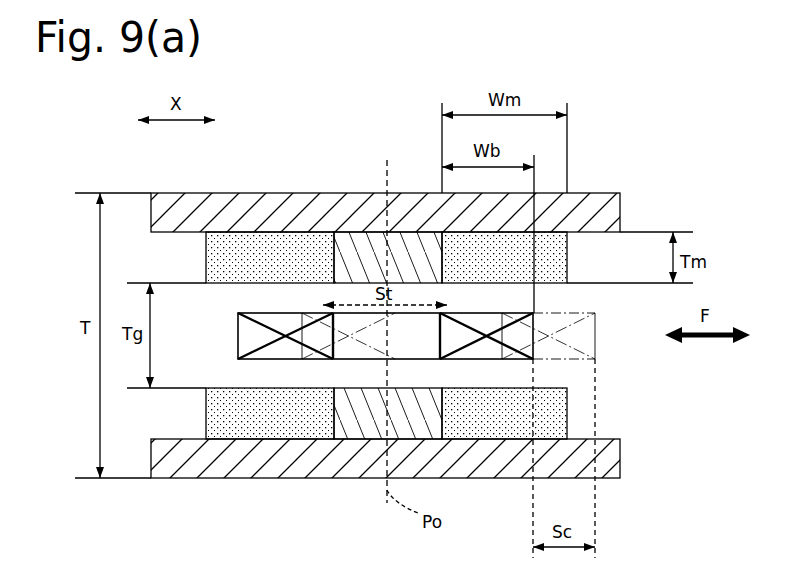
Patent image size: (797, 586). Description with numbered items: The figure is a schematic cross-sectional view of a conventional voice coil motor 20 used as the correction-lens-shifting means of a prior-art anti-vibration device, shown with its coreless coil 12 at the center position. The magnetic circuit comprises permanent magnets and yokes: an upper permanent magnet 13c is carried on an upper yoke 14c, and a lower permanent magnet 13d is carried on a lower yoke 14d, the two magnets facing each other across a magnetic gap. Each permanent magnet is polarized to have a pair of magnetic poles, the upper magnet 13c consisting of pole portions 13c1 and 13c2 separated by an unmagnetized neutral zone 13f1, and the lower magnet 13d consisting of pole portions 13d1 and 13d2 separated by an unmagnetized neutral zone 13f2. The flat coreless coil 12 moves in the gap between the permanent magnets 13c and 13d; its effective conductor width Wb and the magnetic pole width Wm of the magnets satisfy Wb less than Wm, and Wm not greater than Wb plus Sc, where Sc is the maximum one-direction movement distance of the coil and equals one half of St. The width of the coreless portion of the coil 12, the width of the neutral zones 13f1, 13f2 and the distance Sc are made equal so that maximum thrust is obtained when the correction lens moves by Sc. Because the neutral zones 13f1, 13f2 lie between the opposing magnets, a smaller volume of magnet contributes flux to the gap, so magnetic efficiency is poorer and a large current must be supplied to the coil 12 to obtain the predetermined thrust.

The voice coil motor 20 is at (628, 170).
The coreless coil 12 is at (493, 318).
The permanent magnet 13c is at (386, 278).
The magnetic pole portion of permanent magnet 13c1 is at (233, 272).
The magnetic pole portion of permanent magnet 13c2 is at (552, 265).
The neutral zone 13f1 is at (408, 269).
The permanent magnet 13d is at (386, 391).
The magnetic pole portion of permanent magnet 13d1 is at (233, 397).
The magnetic pole portion of permanent magnet 13d2 is at (550, 408).
The neutral zone 13f2 is at (408, 425).
The yoke 14c is at (225, 203).
The yoke 14d is at (223, 468).